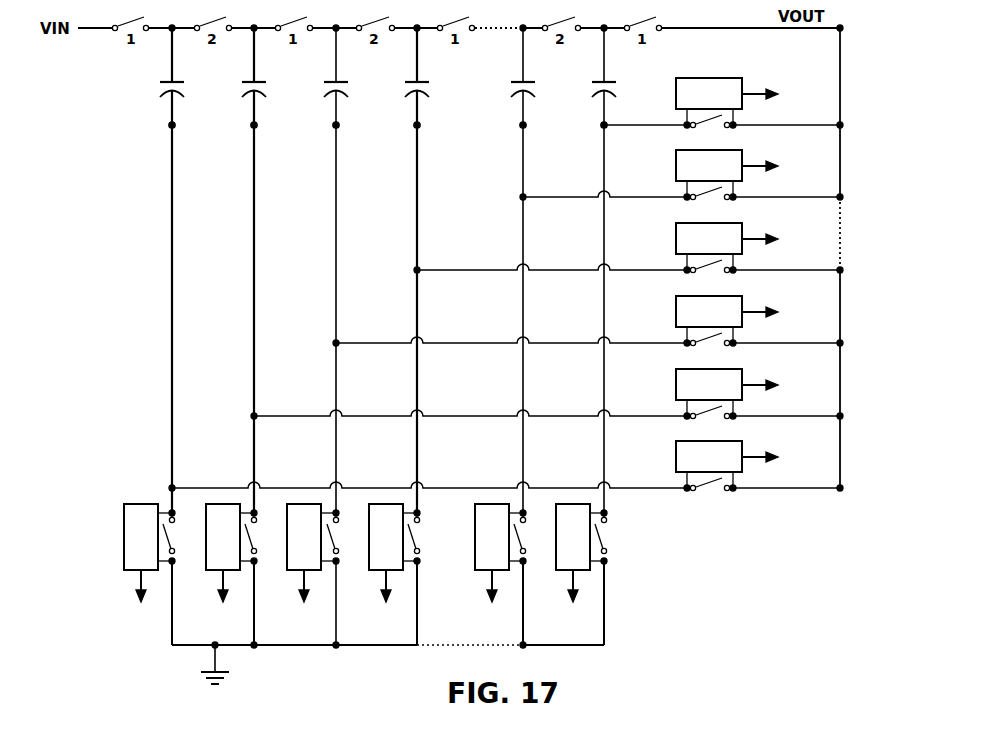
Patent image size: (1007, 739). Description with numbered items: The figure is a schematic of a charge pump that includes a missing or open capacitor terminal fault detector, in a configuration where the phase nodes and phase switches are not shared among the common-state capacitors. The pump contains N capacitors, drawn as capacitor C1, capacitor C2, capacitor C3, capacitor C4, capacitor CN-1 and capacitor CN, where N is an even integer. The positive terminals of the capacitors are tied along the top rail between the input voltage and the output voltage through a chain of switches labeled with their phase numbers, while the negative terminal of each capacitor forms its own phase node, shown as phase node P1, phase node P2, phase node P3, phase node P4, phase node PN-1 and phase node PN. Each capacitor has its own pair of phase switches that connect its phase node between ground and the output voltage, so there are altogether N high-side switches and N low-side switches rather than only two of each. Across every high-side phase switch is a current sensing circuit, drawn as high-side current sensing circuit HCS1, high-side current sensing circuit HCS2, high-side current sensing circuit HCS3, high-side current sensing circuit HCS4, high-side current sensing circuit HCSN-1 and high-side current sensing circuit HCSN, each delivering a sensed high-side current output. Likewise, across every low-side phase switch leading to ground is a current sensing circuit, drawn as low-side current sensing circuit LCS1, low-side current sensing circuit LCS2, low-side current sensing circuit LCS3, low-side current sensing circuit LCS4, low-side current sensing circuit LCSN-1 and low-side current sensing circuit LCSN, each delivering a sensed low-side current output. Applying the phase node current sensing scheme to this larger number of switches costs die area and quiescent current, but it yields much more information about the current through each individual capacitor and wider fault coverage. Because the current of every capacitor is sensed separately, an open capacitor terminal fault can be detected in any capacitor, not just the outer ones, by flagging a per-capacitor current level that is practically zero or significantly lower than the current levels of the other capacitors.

The capacitor C1 is at (182, 270).
The capacitor C2 is at (264, 270).
The capacitor C3 is at (346, 270).
The capacitor C4 is at (427, 270).
The capacitor CN-1 is at (539, 270).
The capacitor CN is at (615, 270).
The phase node P1 is at (169, 125).
The phase node P2 is at (251, 125).
The phase node P3 is at (333, 125).
The phase node P4 is at (414, 125).
The phase node PN-1 is at (520, 125).
The phase node PN is at (601, 125).
The high-side current sensing circuit HCS1 is at (754, 475).
The high-side current sensing circuit HCS2 is at (754, 403).
The high-side current sensing circuit HCS3 is at (754, 330).
The high-side current sensing circuit HCS4 is at (754, 257).
The high-side current sensing circuit HCSN-1 is at (760, 184).
The high-side current sensing circuit HCSN is at (755, 112).
The low-side current sensing circuit LCS1 is at (150, 574).
The low-side current sensing circuit LCS2 is at (232, 574).
The low-side current sensing circuit LCS3 is at (314, 574).
The low-side current sensing circuit LCS4 is at (395, 574).
The low-side current sensing circuit LCSN-1 is at (495, 574).
The low-side current sensing circuit LCSN is at (581, 574).